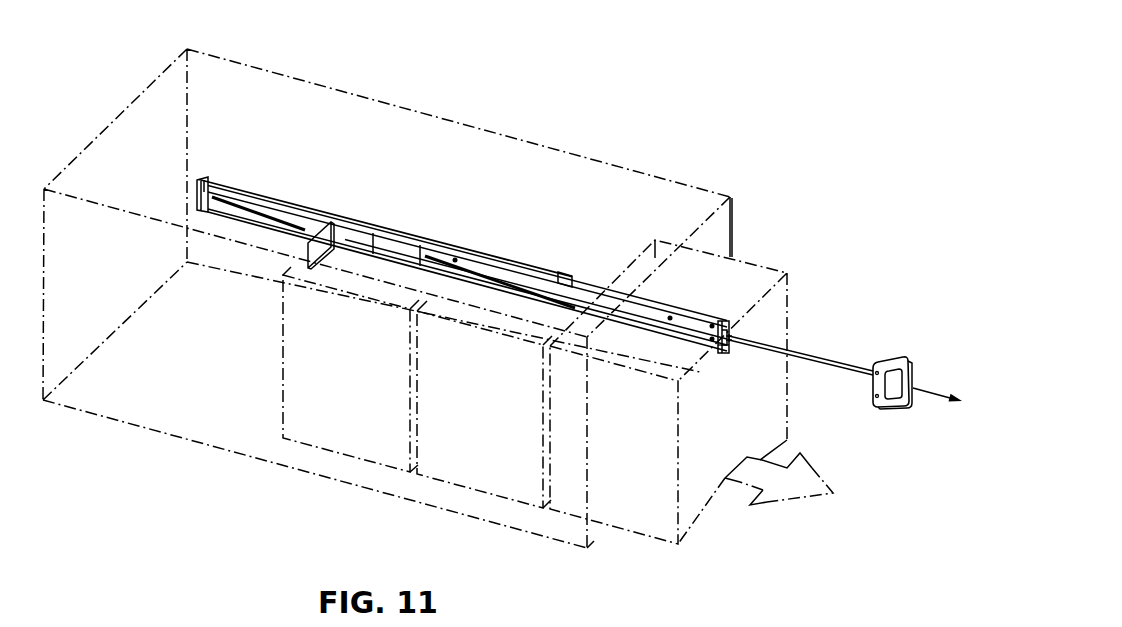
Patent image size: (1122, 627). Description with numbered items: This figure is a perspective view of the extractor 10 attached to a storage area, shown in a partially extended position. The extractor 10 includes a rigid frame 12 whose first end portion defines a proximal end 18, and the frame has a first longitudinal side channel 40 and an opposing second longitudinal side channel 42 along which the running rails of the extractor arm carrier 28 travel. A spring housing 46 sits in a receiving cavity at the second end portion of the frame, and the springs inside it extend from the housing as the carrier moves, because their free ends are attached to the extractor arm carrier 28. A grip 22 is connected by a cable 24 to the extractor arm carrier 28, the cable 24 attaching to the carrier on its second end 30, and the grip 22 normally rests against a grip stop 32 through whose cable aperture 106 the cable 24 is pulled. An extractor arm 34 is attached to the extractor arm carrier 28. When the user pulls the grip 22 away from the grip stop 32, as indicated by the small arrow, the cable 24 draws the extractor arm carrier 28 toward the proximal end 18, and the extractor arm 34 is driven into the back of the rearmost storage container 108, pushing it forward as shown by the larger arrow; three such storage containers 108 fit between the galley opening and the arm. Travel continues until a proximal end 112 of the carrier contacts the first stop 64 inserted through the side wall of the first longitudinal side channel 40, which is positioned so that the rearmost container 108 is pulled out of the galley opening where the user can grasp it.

The extractor 10 is at (296, 140).
The rigid frame 12 is at (467, 255).
The proximal end 18 is at (749, 341).
The grip 22 is at (910, 373).
The cable 24 is at (833, 365).
The extractor arm carrier 28 is at (401, 250).
The second end 30 is at (453, 230).
The grip stop 32 is at (731, 338).
The extractor arm 34 is at (322, 248).
The first longitudinal side channel 40 is at (430, 236).
The second longitudinal side channel 42 is at (242, 222).
The spring housing 46 is at (206, 193).
The first stop 64 is at (562, 279).
The aperture 106 is at (729, 347).
The storage container 108 is at (633, 510).
The proximal end 112 is at (428, 268).